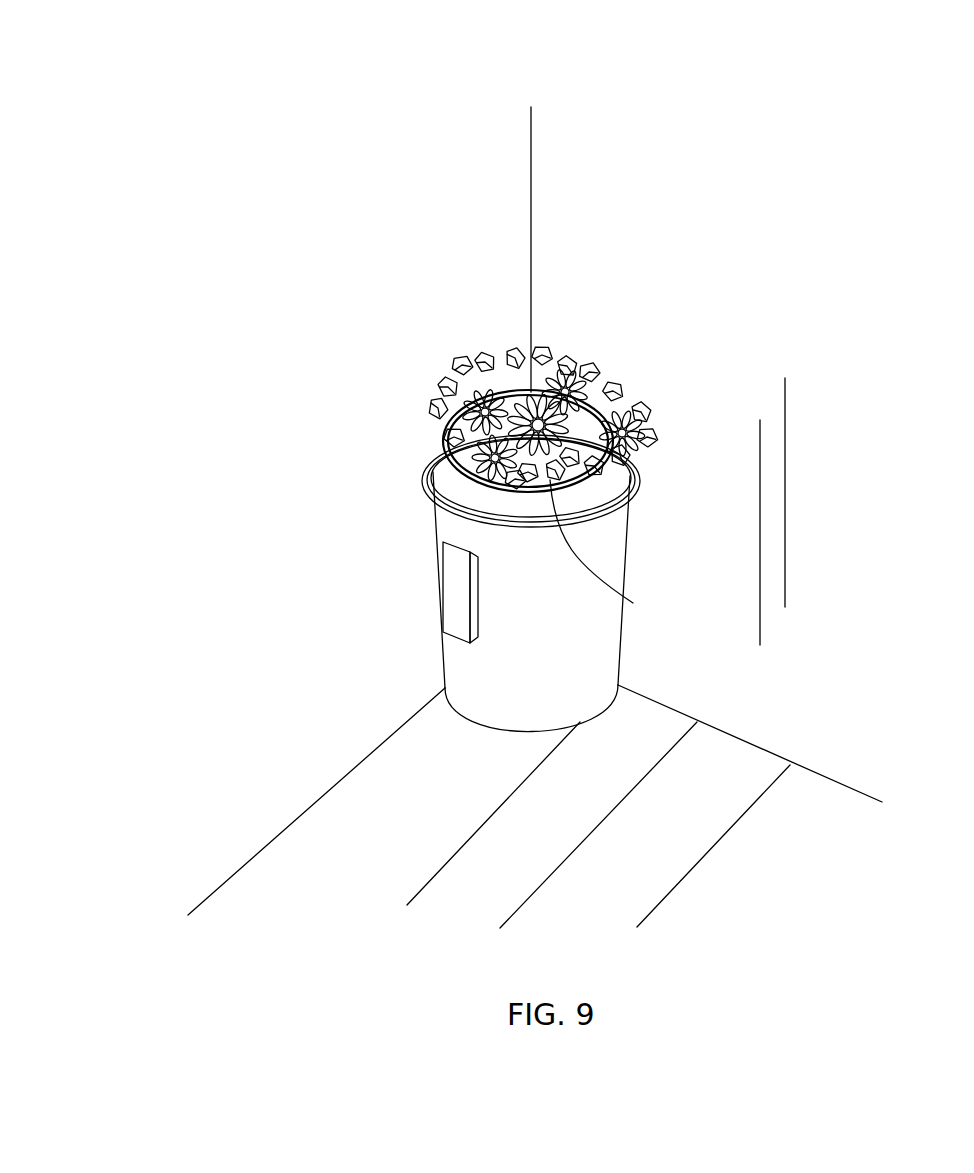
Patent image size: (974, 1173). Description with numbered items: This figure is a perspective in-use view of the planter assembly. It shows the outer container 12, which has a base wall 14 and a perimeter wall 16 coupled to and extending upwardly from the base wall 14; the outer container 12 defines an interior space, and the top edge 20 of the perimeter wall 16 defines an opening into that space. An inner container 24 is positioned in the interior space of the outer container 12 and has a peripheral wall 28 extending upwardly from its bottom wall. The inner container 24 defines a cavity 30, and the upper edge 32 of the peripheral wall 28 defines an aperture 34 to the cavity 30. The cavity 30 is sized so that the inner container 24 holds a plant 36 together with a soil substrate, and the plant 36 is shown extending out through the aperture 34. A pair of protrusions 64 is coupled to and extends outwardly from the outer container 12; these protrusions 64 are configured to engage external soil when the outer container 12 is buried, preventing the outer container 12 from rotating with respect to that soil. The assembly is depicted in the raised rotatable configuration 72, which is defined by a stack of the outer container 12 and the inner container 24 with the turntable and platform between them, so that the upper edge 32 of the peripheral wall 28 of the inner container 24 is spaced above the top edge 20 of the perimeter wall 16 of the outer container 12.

The outer container 12 is at (662, 640).
The base wall 14 is at (590, 720).
The perimeter wall 16 is at (520, 643).
The top edge 20 is at (630, 480).
The inner container 24 is at (430, 473).
The peripheral wall 28 is at (480, 483).
The cavity 30 is at (610, 373).
The upper edge 32 is at (605, 549).
The aperture 34 is at (502, 363).
The plant 36 is at (572, 357).
The pair of protrusions 64 is at (713, 287).
The raised rotatable configuration 72 is at (710, 392).